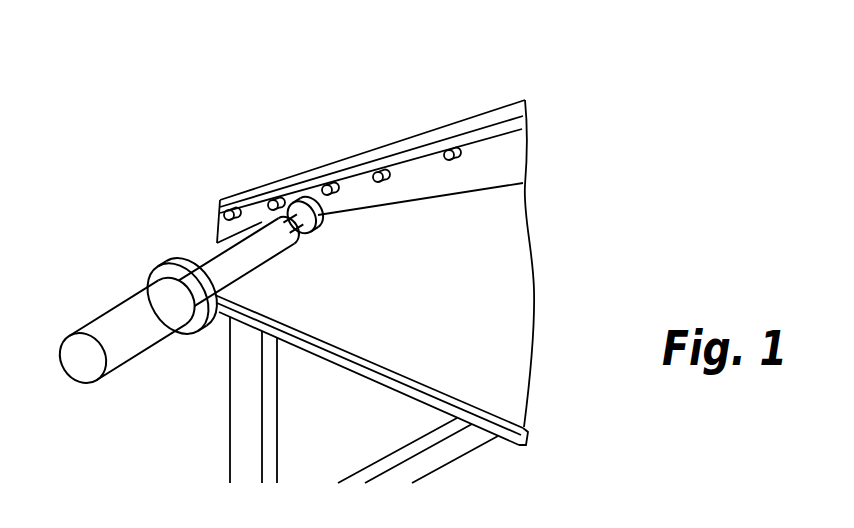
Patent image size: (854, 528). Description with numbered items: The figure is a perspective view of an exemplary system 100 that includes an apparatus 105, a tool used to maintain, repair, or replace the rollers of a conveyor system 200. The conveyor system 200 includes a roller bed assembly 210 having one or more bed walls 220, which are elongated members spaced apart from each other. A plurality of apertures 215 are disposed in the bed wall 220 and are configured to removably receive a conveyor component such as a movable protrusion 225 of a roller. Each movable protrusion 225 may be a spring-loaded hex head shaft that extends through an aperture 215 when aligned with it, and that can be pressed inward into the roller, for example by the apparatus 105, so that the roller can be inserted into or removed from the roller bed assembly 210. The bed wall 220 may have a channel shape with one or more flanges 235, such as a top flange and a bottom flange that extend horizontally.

The system 100 is at (226, 90).
The apparatus 105 is at (144, 253).
The conveyor system 200 is at (391, 83).
The roller bed assembly 210 is at (539, 195).
The aperture 215 is at (319, 173).
The bed wall 220 is at (507, 312).
The movable protrusion 225 is at (458, 148).
The flange 235 is at (507, 113).